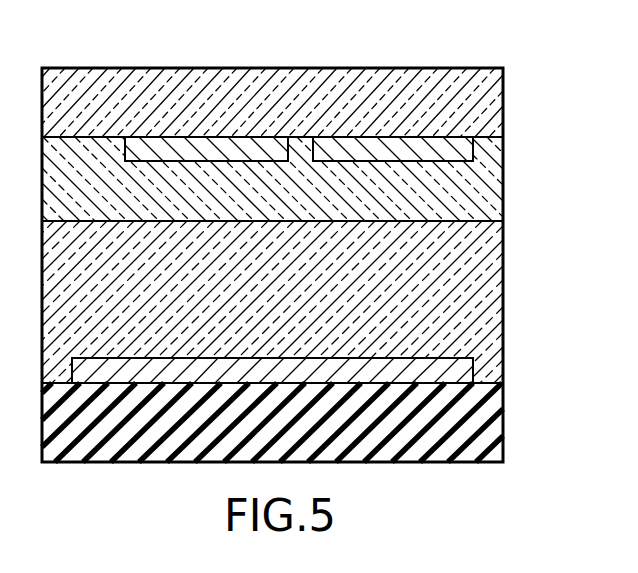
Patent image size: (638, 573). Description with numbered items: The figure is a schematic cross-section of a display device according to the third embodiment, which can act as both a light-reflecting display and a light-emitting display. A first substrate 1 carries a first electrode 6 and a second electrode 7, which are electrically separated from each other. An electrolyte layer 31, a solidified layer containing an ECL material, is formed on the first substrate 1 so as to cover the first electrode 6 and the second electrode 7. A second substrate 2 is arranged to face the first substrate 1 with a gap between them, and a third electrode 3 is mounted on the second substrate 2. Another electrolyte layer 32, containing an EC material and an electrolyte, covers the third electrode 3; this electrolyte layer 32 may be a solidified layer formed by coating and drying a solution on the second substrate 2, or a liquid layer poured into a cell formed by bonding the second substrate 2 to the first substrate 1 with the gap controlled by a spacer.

The first substrate 1 is at (497, 105).
The electrolyte layer 31 is at (495, 184).
The electrolyte layer 32 is at (497, 292).
The second substrate 2 is at (495, 426).
The third electrode 3 is at (463, 371).
The first electrode 6 is at (213, 145).
The second electrode 7 is at (392, 147).